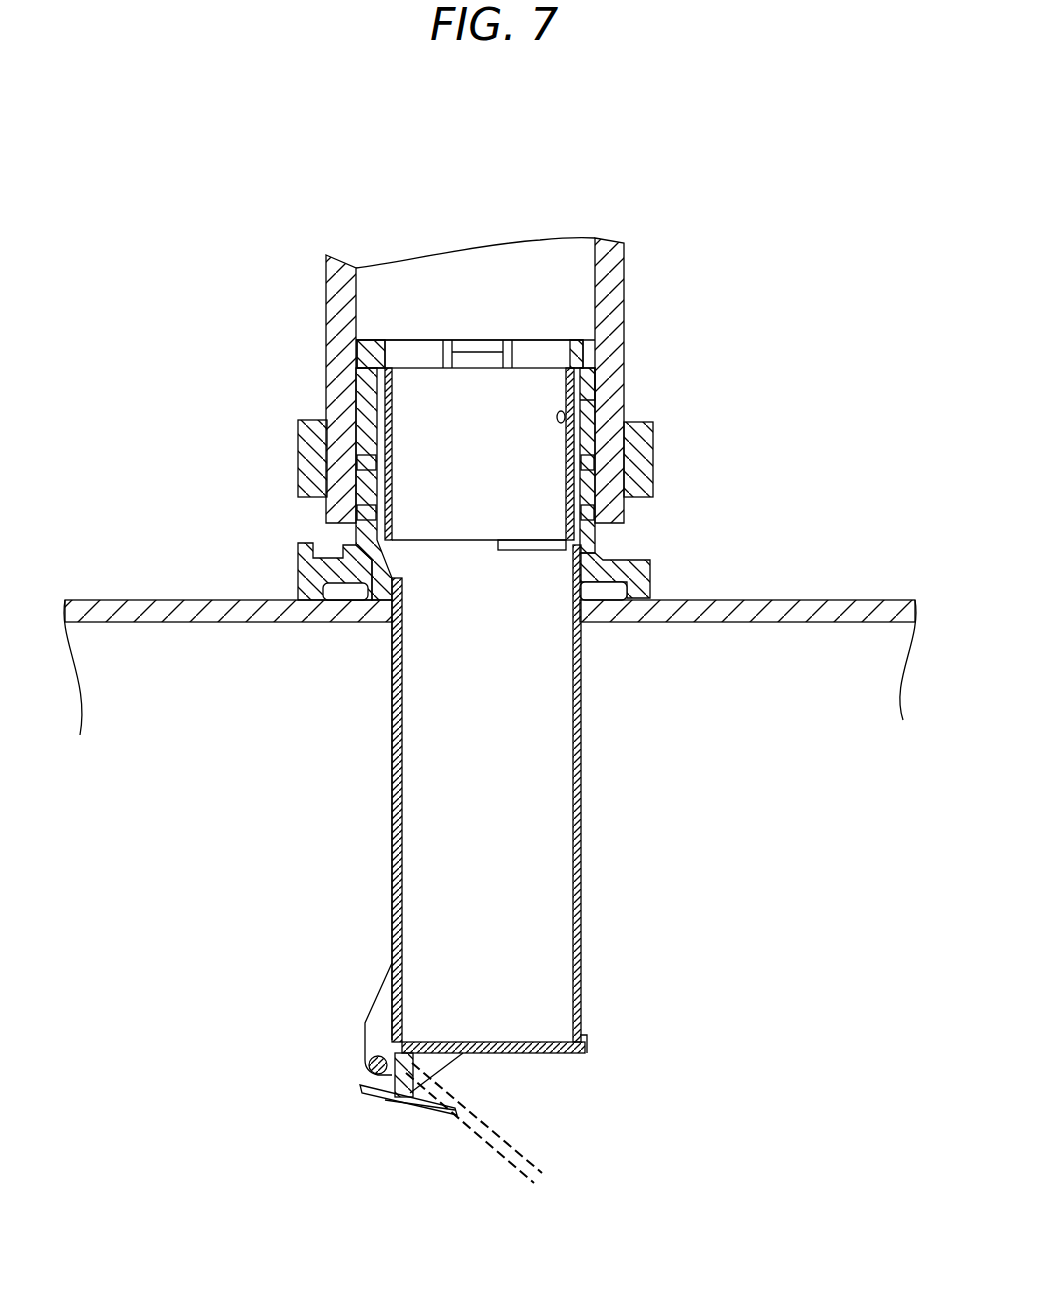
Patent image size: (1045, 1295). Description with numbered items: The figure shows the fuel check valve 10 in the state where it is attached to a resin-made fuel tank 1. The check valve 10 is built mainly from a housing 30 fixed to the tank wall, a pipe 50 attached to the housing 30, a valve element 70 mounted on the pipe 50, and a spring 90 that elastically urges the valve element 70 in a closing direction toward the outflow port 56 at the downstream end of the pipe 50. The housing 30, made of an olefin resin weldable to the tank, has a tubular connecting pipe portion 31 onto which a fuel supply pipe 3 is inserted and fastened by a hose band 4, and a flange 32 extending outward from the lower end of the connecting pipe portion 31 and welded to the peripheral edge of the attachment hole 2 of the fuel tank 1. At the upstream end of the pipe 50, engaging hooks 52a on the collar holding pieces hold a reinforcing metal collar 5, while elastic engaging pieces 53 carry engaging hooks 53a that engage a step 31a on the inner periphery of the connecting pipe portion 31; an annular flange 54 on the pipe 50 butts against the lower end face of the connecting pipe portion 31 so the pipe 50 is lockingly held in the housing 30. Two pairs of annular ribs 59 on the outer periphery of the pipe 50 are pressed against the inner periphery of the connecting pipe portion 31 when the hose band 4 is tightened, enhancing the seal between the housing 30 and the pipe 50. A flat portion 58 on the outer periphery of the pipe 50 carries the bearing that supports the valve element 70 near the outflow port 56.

The fuel tank 1 is at (885, 600).
The attachment hole 2 is at (616, 622).
The fuel supply pipe 3 is at (612, 268).
The hose band 4 is at (653, 457).
The reinforcing metal collar 5 is at (565, 422).
The fuel check valve 10 is at (247, 280).
The housing 30 is at (340, 538).
The connecting pipe portion 31 is at (603, 490).
The step 31a is at (605, 392).
The flange 32 is at (650, 572).
The pipe 50 is at (585, 852).
The engaging hooks 52a is at (483, 360).
The elastic engaging pieces 53 is at (538, 358).
The engaging hooks 53a is at (372, 360).
The annular flange 54 is at (368, 590).
The outflow port 56 is at (538, 1020).
The flat portion 58 is at (392, 880).
The annular ribs 59 is at (352, 528).
The valve element 70 is at (478, 1148).
The spring 90 is at (355, 1057).